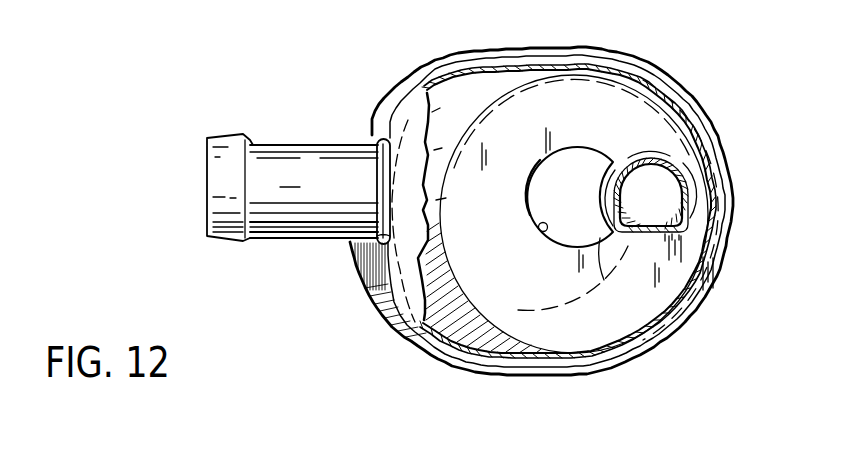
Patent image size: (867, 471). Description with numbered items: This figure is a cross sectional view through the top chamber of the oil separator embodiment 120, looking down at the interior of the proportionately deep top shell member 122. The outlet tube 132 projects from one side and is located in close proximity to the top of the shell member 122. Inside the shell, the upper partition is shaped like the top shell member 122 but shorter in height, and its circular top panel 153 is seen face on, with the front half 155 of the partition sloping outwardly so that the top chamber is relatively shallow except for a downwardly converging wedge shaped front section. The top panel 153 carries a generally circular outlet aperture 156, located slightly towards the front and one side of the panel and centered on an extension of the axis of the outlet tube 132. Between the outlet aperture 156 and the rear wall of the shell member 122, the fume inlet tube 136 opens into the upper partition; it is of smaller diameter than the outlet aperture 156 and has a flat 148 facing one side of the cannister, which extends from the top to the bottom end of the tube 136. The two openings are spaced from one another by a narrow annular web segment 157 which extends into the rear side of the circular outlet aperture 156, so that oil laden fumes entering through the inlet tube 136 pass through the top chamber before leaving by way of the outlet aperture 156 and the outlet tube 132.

The oil separator embodiment 120 is at (378, 317).
The top shell member 122 is at (395, 284).
The outlet tube 132 is at (313, 142).
The fume inlet tube 136 is at (651, 168).
The flat 148 is at (627, 235).
The top panel 153 is at (572, 93).
The front half 155 is at (457, 117).
The outlet aperture 156 is at (540, 231).
The annular web segment 157 is at (601, 197).